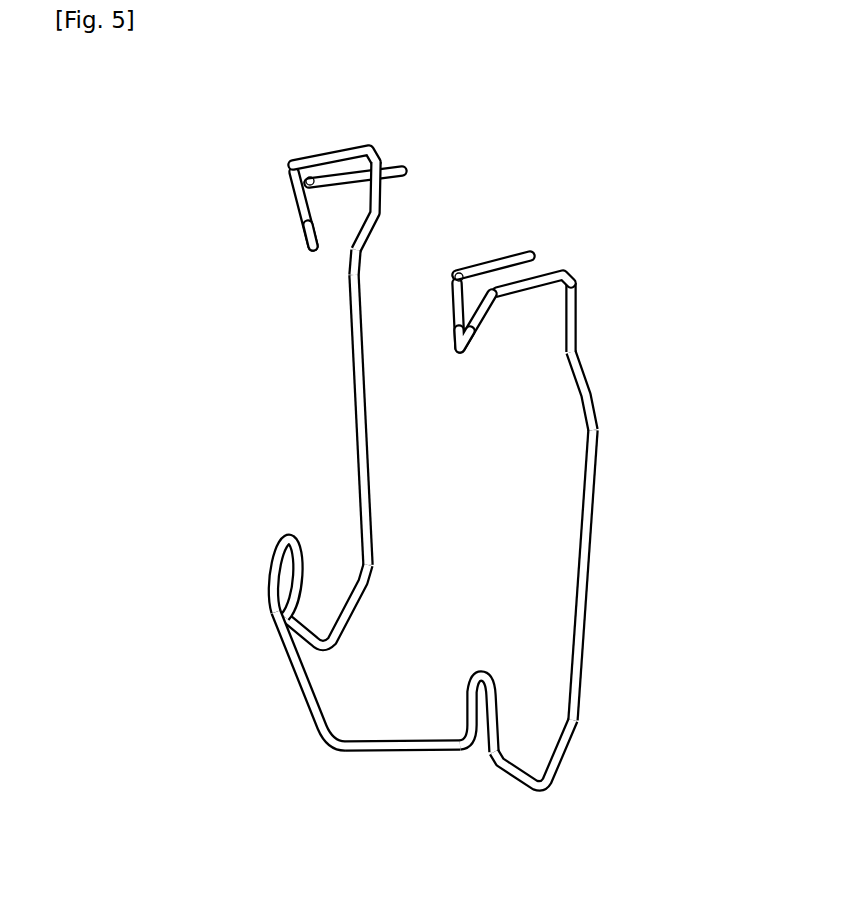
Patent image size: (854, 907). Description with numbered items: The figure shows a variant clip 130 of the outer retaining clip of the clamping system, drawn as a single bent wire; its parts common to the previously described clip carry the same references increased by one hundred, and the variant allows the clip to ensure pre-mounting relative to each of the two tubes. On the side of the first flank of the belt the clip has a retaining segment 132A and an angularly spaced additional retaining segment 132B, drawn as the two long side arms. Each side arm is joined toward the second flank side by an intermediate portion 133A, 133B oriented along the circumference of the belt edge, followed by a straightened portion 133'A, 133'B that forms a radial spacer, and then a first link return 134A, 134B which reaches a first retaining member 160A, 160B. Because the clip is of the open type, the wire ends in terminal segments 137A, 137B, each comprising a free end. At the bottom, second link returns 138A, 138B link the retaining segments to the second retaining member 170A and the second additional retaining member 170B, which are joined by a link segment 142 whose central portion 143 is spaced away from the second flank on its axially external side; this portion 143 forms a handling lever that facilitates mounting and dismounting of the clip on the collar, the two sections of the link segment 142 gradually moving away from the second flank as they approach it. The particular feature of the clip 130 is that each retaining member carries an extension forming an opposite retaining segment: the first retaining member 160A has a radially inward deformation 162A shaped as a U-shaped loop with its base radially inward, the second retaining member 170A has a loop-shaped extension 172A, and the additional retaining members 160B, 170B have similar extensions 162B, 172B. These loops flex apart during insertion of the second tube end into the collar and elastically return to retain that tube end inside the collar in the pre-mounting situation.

The clip 130 is at (428, 462).
The retaining segment 132A is at (356, 421).
The additional retaining segment 132B is at (589, 562).
The intermediate portion 133A is at (372, 250).
The intermediate portion 133B is at (587, 385).
The straightened portion 133'A is at (426, 206).
The straightened portion 133'B is at (632, 317).
The first link return 134A is at (329, 152).
The first additional link return 134B is at (560, 271).
The terminal segment 137A is at (385, 160).
The terminal segment 137B is at (520, 253).
The second link return 138A is at (360, 641).
The second additional link return 138B is at (571, 786).
The link segment 142 is at (362, 780).
The central portion 143 is at (327, 752).
The first retaining member 160A is at (296, 202).
The first additional retaining member 160B is at (453, 288).
The deformation 162A is at (298, 242).
The extension 162B is at (470, 352).
The second retaining member 170A is at (205, 568).
The second additional retaining member 170B is at (565, 681).
The extension 172A is at (277, 560).
The extension 172B is at (500, 685).